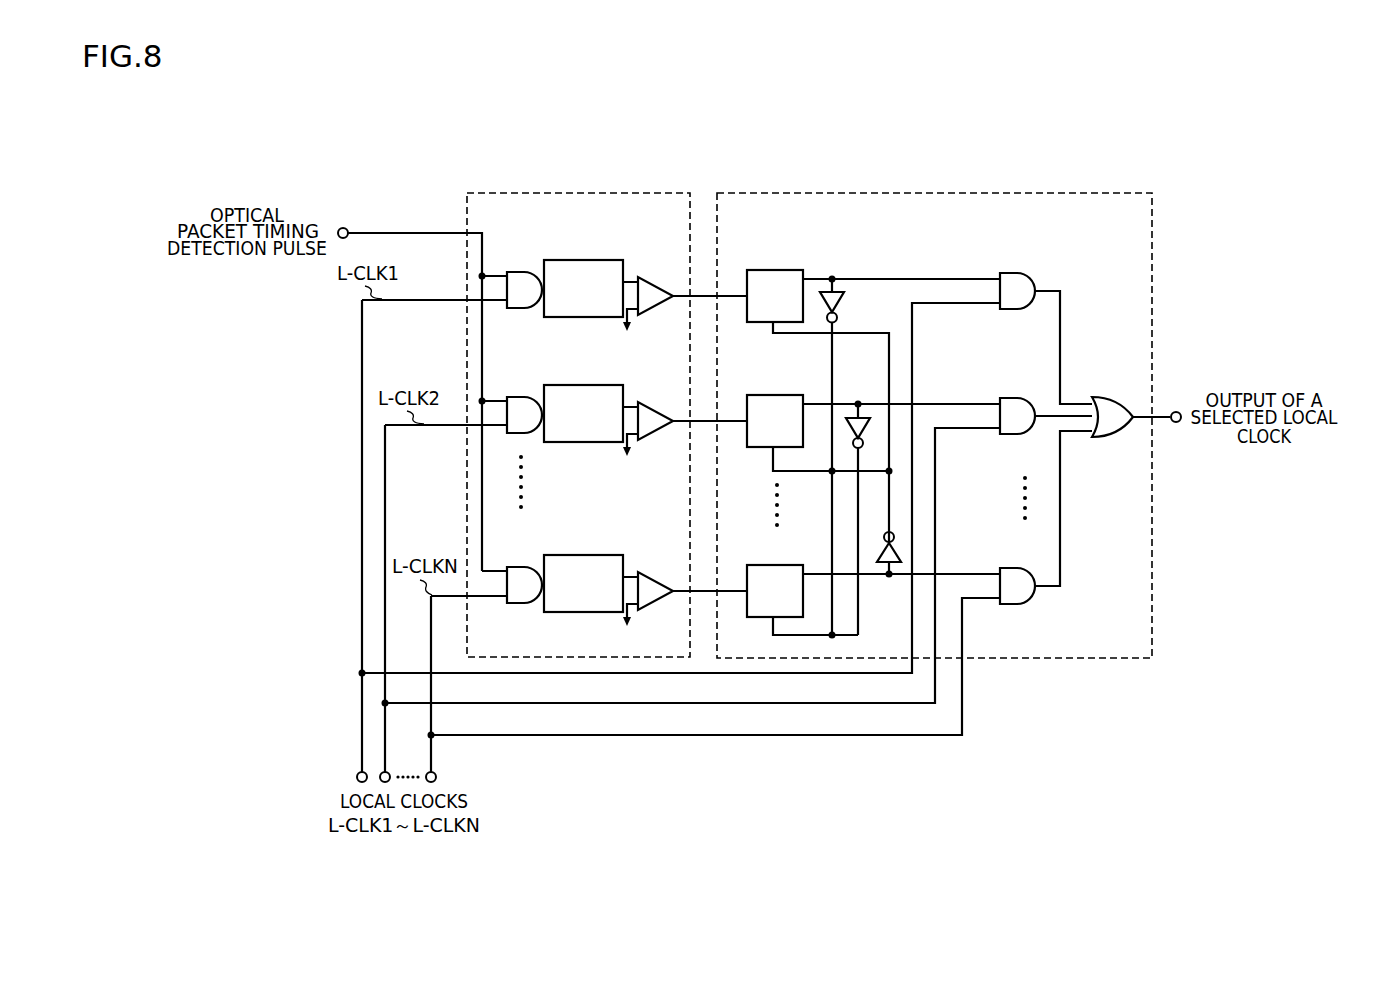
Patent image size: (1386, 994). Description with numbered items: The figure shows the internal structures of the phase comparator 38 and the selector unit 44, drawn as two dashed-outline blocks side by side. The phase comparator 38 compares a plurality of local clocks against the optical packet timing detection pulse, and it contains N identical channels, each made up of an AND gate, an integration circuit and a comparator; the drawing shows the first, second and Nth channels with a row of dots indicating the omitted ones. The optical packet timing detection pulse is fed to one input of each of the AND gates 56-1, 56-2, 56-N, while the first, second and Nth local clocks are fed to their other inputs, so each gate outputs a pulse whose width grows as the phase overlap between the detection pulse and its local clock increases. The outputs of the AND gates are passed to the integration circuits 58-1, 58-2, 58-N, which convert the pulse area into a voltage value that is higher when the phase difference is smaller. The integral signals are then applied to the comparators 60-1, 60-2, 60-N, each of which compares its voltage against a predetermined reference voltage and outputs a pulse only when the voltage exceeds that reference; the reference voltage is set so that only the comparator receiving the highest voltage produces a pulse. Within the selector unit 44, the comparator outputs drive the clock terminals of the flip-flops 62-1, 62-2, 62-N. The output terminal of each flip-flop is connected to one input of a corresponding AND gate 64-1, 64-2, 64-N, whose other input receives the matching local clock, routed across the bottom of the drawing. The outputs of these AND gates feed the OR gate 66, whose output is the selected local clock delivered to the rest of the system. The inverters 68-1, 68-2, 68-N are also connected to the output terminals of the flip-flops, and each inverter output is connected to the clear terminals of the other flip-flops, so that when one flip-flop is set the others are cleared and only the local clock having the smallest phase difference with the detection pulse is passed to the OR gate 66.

The phase comparator 38 is at (618, 193).
The selector unit 44 is at (1096, 193).
The AND gate 56-1 is at (535, 273).
The AND gate 56-2 is at (535, 398).
The AND gate 56-N is at (535, 569).
The integration circuit 58-1 is at (603, 261).
The integration circuit 58-2 is at (603, 385).
The integration circuit 58-N is at (603, 559).
The comparator 60-1 is at (660, 273).
The comparator 60-2 is at (660, 401).
The comparator 60-N is at (660, 570).
The flip-flop 62-1 is at (802, 261).
The flip-flop 62-2 is at (802, 386).
The flip-flop 62-N is at (802, 556).
The AND gate 64-1 is at (1027, 265).
The AND gate 64-2 is at (1027, 391).
The AND gate 64-N is at (1027, 560).
The OR gate 66 is at (1114, 401).
The inverter 68-1 is at (844, 302).
The inverter 68-2 is at (865, 407).
The inverter 68-N is at (882, 569).